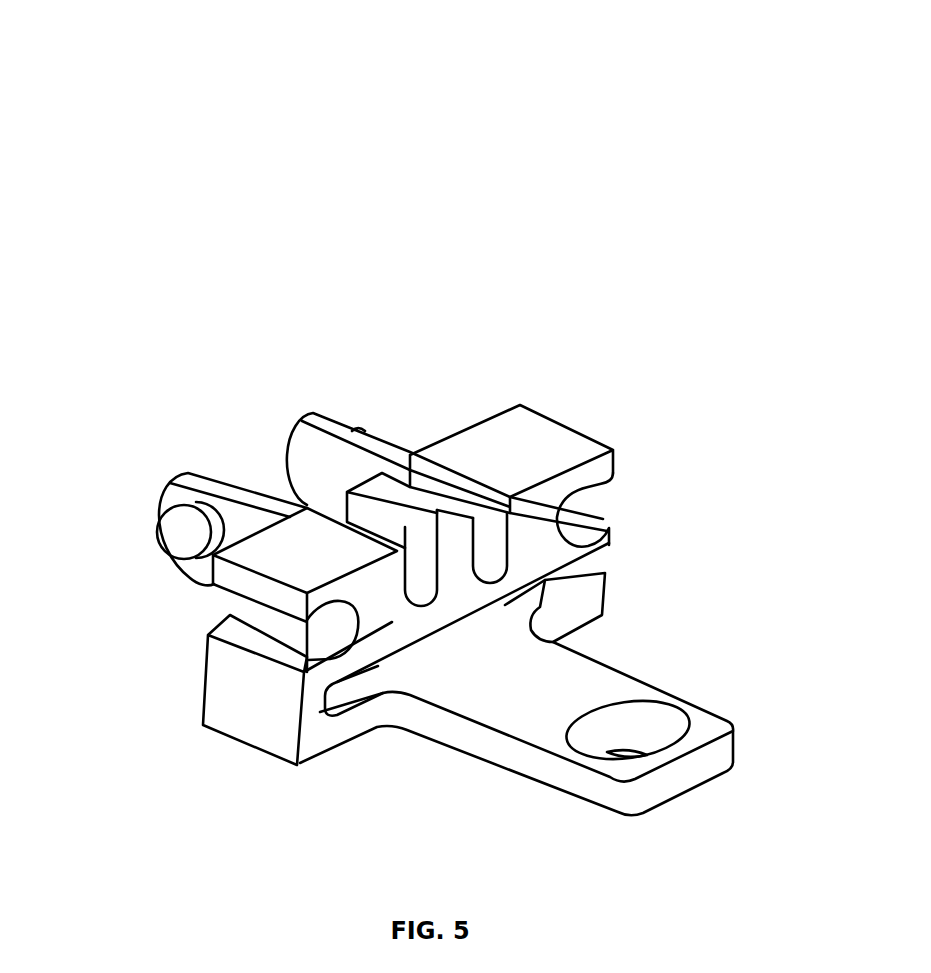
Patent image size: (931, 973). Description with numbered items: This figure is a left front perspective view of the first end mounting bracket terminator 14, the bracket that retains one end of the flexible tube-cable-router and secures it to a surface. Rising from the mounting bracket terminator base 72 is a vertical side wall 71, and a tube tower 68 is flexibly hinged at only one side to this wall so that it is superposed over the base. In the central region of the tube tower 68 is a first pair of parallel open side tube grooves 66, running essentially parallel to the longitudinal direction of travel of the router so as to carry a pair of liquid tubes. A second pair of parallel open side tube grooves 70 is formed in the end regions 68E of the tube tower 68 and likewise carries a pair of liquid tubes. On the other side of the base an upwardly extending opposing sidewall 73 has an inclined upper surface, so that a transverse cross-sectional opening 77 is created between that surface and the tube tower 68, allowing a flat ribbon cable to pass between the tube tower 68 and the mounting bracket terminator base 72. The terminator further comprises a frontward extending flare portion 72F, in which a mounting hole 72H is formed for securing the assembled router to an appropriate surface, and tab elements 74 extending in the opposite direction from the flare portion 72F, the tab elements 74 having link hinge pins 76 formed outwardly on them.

The first end mounting bracket terminator 14 is at (315, 235).
The first pair of parallel open side tube grooves 66 is at (493, 547).
The tube tower 68 is at (384, 621).
The end regions of tube tower 68E is at (590, 427).
The second pair of parallel open side tube grooves 70 is at (590, 503).
The vertical side wall 71 is at (220, 715).
The mounting bracket terminator base 72 is at (561, 750).
The frontward extending flare portion 72F is at (682, 688).
The mounting hole 72H is at (730, 737).
The opposing sidewall 73 is at (607, 598).
The tab elements 74 is at (293, 455).
The link hinge pins 76 is at (177, 533).
The transverse cross-sectional opening 77 is at (465, 632).